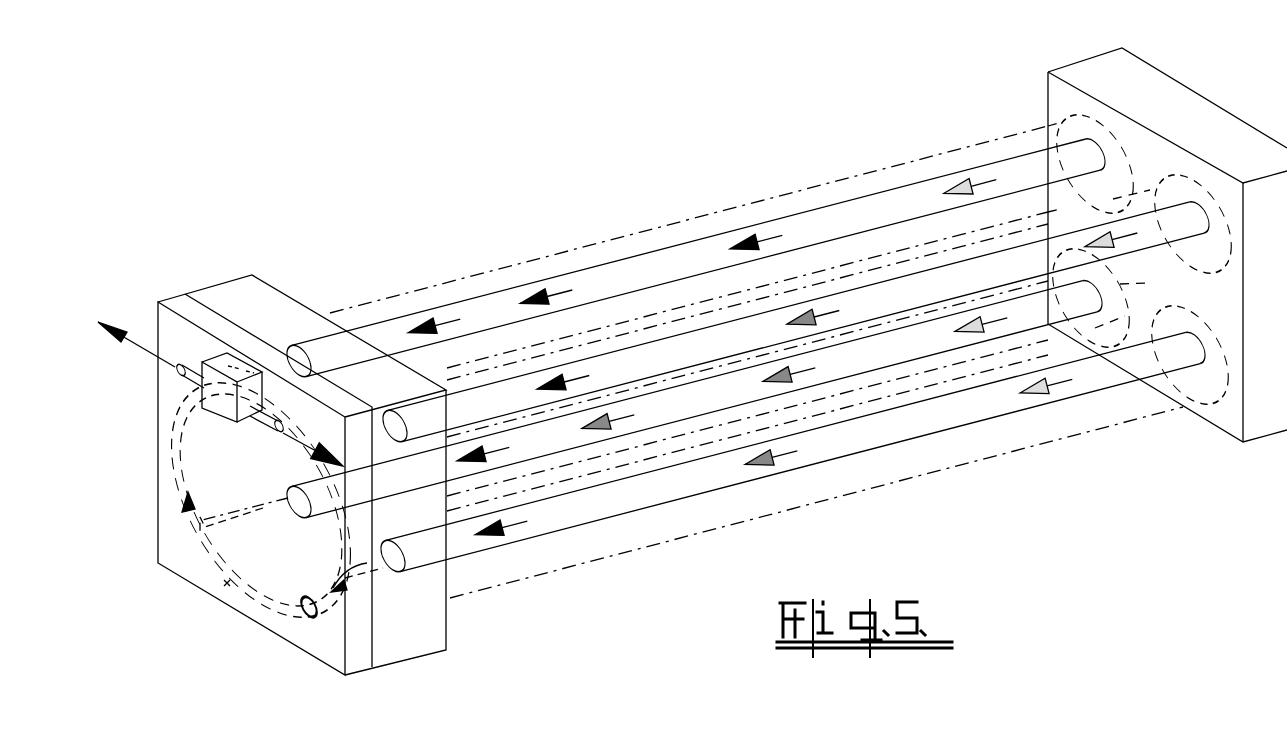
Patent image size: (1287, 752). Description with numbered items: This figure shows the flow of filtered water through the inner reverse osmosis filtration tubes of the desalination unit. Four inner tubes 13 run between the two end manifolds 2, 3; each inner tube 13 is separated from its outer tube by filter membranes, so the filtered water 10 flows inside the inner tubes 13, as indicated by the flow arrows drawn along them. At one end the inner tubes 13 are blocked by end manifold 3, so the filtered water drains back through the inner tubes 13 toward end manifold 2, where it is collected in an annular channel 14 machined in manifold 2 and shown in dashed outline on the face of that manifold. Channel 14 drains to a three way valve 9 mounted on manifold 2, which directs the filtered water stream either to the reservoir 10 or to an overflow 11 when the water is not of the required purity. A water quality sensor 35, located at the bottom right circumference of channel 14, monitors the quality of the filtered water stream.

The end manifold 2 is at (232, 292).
The end manifold 3 is at (1192, 106).
The three way valve 9 is at (218, 391).
The reservoir 10 is at (135, 351).
The overflow 11 is at (304, 455).
The inner tube 13 is at (687, 254).
The annular channel 14 is at (224, 585).
The water quality sensor 35 is at (310, 617).